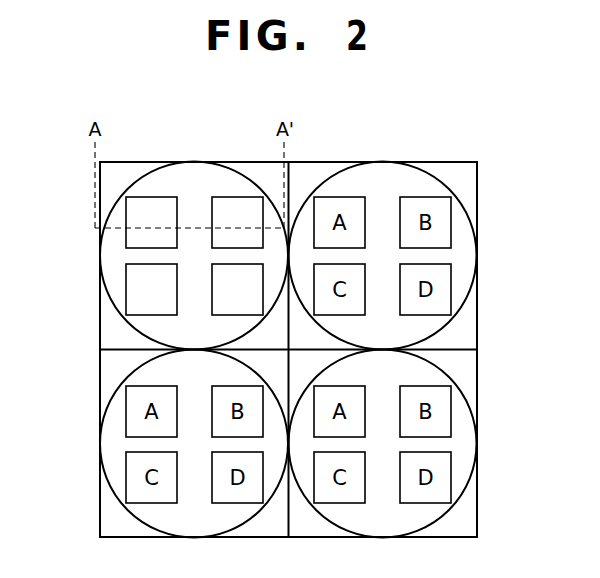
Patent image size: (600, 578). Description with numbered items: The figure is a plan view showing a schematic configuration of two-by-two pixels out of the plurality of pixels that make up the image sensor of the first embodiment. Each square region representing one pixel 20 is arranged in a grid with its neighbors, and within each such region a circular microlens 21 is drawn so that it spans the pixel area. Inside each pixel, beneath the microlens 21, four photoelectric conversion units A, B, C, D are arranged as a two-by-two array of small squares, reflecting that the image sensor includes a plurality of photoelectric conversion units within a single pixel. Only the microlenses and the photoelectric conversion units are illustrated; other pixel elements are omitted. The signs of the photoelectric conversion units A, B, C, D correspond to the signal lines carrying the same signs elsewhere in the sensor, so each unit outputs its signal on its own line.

The region representing one pixel 20 is at (145, 161).
The microlens 21 is at (118, 313).
The photoelectric conversion unit A is at (151, 222).
The photoelectric conversion unit B is at (237, 222).
The photoelectric conversion unit C is at (151, 289).
The photoelectric conversion unit D is at (237, 289).